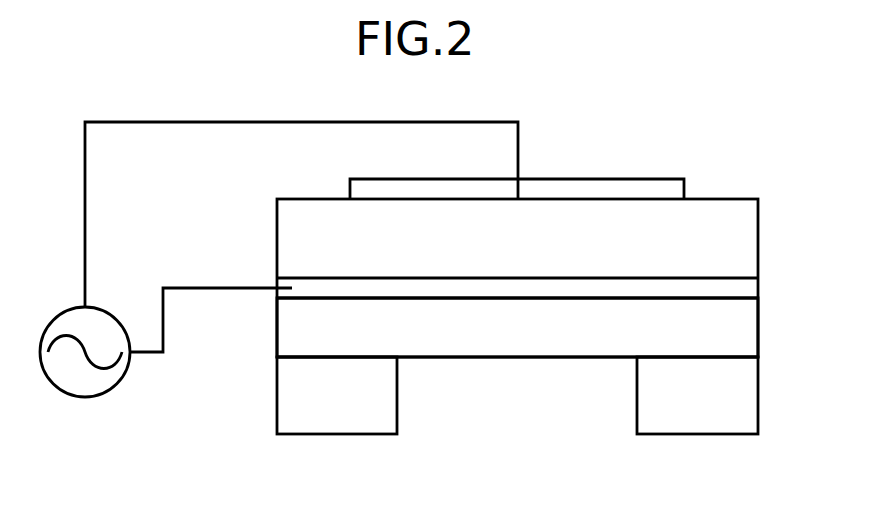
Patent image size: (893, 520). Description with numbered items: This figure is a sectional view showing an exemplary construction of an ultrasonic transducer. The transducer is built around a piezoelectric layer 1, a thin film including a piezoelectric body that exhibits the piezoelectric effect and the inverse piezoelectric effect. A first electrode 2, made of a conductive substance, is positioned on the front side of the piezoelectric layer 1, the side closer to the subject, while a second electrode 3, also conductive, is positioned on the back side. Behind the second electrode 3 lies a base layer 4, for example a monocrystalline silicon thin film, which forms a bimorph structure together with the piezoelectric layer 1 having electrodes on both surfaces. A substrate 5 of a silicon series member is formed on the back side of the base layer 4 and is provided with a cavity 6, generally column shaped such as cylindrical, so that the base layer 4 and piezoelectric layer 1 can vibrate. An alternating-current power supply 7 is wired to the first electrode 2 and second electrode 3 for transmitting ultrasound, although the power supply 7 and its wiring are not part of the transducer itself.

The piezoelectric layer 1 is at (712, 243).
The first electrode 2 is at (647, 190).
The second electrode 3 is at (746, 293).
The base layer 4 is at (744, 328).
The substrate 5 is at (342, 417).
The cavity 6 is at (520, 436).
The power supply 7 is at (85, 397).